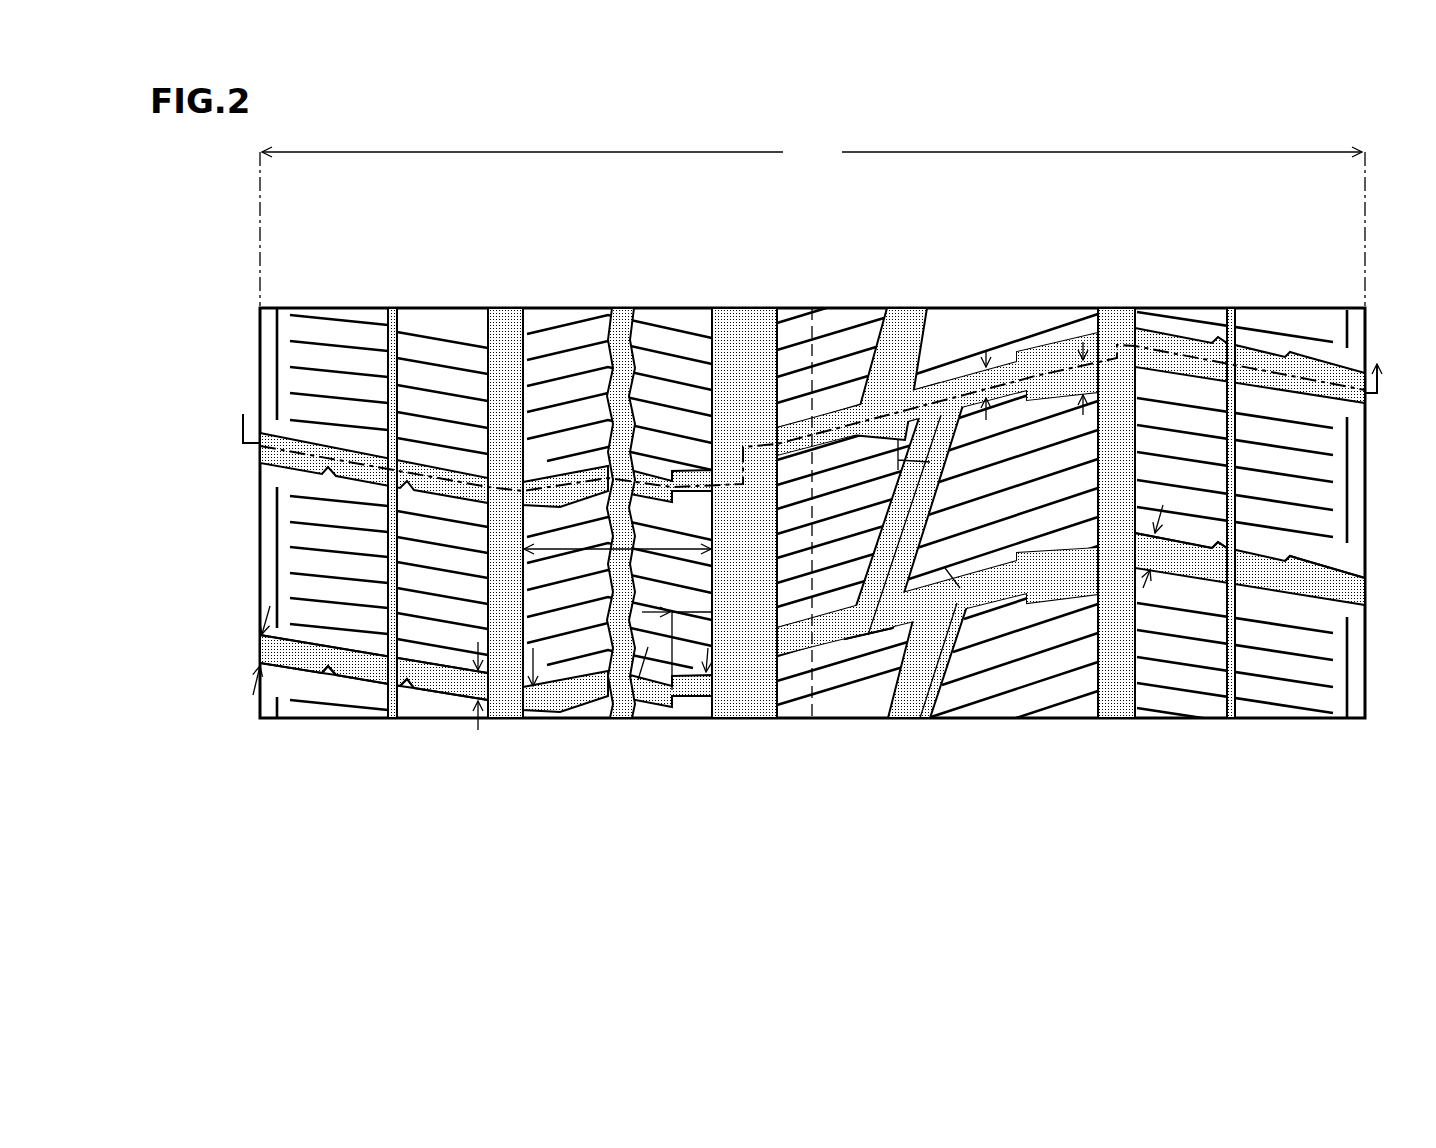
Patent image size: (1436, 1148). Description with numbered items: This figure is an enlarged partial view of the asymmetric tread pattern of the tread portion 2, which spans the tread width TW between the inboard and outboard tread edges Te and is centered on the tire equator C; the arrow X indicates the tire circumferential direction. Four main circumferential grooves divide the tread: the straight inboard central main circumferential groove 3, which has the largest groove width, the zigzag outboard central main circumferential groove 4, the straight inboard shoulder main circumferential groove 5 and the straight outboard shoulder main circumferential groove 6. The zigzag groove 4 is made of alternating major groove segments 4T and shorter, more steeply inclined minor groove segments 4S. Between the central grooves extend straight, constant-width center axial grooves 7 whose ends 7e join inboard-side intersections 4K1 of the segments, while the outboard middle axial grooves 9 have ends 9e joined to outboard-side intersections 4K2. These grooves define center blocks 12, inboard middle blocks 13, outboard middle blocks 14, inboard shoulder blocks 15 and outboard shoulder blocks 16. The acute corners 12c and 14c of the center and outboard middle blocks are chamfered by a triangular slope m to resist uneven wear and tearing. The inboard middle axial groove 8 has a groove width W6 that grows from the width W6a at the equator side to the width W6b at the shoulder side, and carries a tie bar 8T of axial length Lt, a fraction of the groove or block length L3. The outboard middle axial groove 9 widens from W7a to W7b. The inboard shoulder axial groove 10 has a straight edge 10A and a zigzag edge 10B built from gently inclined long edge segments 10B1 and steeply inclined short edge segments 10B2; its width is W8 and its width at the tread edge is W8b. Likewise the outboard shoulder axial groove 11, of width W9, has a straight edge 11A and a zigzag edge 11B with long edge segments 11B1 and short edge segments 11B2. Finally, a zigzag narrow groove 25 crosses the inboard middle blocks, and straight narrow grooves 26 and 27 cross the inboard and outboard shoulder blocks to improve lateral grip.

The tread portion 2 is at (1175, 285).
The inboard central main circumferential groove 3 is at (740, 335).
The outboard central main circumferential groove 4 is at (937, 574).
The intersections on the inboard tread edge side 4K1 is at (862, 645).
The intersections on the outboard tread edge side 4K2 is at (968, 625).
The minor groove segment 4S is at (935, 650).
The major groove segment 4T is at (848, 650).
The inboard shoulder main circumferential groove 5 is at (511, 334).
The outboard shoulder main circumferential groove 6 is at (1120, 335).
The center axial groove 7 is at (927, 546).
The end of center axial groove 7e is at (800, 650).
The inboard middle axial groove 8 is at (486, 637).
The tie bar 8T is at (672, 708).
The outboard middle axial groove 9 is at (937, 663).
The end of outboard middle axial groove 9e is at (988, 612).
The inboard shoulder axial groove 10 is at (372, 759).
The straight edge 10A is at (424, 682).
The zigzag edge 10B is at (374, 773).
The long edge segment 10B1 is at (380, 682).
The short edge segment 10B2 is at (323, 682).
The outboard shoulder axial groove 11 is at (1283, 587).
The straight edge 11A is at (1330, 606).
The zigzag edge 11B is at (1217, 689).
The long edge segment 11B1 is at (1188, 552).
The short edge segment 11B2 is at (1222, 546).
The center block 12 is at (794, 337).
The acute-angled corner of center block 12c is at (858, 645).
The inboard middle block 13 is at (670, 340).
The outboard middle block 14 is at (1048, 340).
The acute-angled corner of outboard middle block 14c is at (925, 382).
The inboard shoulder block 15 is at (455, 335).
The outboard shoulder block 16 is at (1286, 345).
The inboard middle narrow circumferential groove 25 is at (619, 332).
The inboard shoulder narrow circumferential groove 26 is at (390, 333).
The outboard shoulder narrow circumferential groove 27 is at (1229, 335).
The triangular slope m is at (900, 705).
The tire equator C is at (812, 308).
The tread edge Te is at (1367, 246).
The tread width TW is at (812, 153).
The tire circumferential direction X is at (810, 389).
The axial length of inboard middle axial groove L3 is at (617, 538).
The axial length of tie bar Lt is at (677, 638).
The groove width of inboard middle axial groove W6 is at (645, 690).
The groove width at tire equator side end W6a is at (706, 690).
The groove width at inboard tread edge side end W6b is at (533, 686).
The groove width at inward tread edge side end W7a is at (986, 352).
The groove width at outward tread edge side end W7b is at (1083, 342).
The groove width of inboard shoulder axial groove W8 is at (478, 730).
The groove width at inboard tread edge W8b is at (262, 634).
The groove width of outboard shoulder axial groove W9 is at (1175, 546).